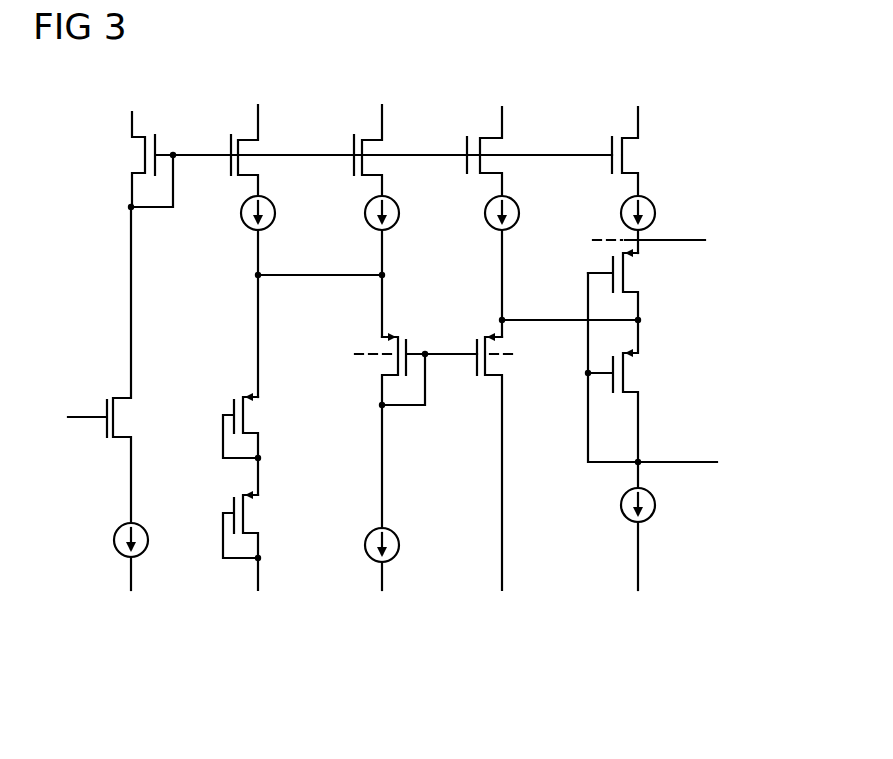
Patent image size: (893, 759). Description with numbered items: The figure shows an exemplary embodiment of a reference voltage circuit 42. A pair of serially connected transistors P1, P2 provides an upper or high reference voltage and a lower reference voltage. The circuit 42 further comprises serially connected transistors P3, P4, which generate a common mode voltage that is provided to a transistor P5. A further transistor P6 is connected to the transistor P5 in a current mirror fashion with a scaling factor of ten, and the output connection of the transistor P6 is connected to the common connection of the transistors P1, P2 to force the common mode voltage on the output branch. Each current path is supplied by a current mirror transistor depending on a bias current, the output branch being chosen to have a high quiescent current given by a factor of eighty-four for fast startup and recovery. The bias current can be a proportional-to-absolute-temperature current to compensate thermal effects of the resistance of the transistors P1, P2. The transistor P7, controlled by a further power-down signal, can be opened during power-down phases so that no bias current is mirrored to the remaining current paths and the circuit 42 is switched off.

The reference voltage circuit 42 is at (450, 601).
The transistor P1 is at (628, 273).
The transistor P2 is at (628, 373).
The transistor P3 is at (248, 513).
The transistor P4 is at (248, 415).
The transistor P5 is at (404, 352).
The transistor P6 is at (481, 445).
The transistor P7 is at (119, 365).